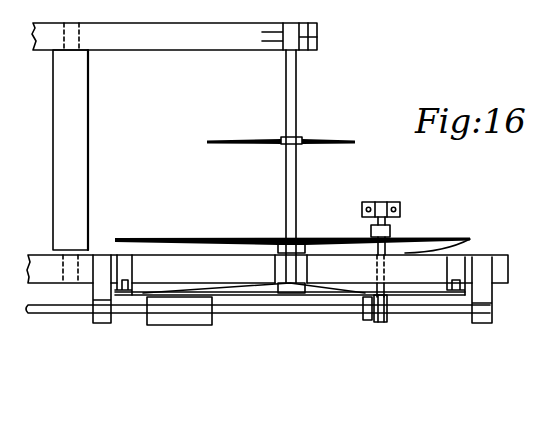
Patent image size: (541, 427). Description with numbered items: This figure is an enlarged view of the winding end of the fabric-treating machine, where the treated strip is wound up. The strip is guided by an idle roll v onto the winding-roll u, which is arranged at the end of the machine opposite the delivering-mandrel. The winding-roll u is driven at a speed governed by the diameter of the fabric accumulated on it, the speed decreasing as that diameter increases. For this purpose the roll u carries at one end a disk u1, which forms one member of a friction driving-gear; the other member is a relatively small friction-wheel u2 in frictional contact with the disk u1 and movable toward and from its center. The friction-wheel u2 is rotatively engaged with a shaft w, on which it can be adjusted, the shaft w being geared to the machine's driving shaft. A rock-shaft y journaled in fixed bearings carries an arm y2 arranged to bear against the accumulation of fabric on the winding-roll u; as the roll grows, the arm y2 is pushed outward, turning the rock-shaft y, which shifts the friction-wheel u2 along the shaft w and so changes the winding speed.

The winding-roll u is at (293, 97).
The idle roll v is at (80, 182).
The disk u1 is at (145, 298).
The friction-wheel u2 is at (365, 305).
The shaft w is at (413, 311).
The rock-shaft y is at (450, 220).
The arm y2 is at (392, 229).